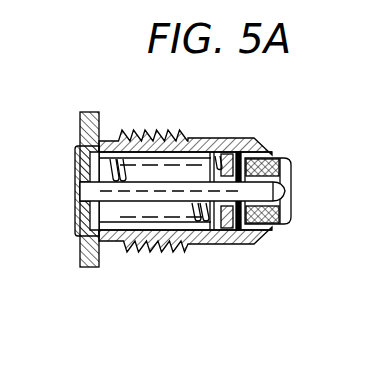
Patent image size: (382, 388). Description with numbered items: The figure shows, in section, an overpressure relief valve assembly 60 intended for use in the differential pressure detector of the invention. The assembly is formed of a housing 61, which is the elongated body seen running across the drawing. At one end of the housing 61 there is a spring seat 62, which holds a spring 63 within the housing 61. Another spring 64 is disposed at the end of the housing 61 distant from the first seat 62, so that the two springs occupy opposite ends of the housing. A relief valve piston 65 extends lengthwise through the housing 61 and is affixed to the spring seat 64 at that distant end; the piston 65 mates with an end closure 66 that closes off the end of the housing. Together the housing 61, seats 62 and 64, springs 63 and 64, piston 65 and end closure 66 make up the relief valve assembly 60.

The overpressure relief valve assembly 60 is at (228, 276).
The housing 61 is at (81, 173).
The spring seat 62 is at (89, 111).
The spring 63 is at (111, 158).
The spring 64 is at (224, 154).
The relief valve piston 65 is at (287, 191).
The end closure 66 is at (277, 158).